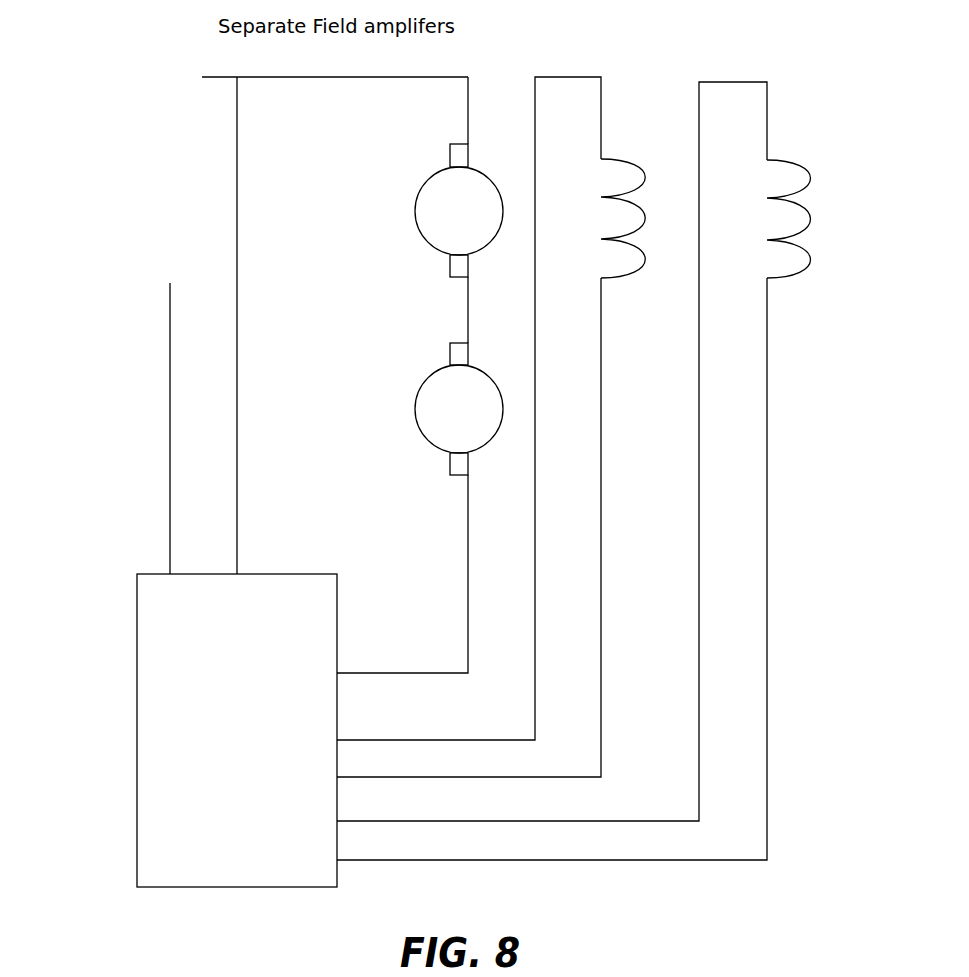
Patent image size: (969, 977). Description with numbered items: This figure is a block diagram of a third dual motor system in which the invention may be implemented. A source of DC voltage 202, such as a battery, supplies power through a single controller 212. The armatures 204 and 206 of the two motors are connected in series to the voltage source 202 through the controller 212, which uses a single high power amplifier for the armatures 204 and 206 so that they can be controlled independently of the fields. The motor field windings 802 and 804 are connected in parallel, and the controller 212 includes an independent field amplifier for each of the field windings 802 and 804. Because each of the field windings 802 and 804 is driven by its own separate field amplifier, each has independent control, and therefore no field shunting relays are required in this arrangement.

The source of DC voltage 202 is at (117, 163).
The armature 204 is at (416, 207).
The armature 206 is at (422, 390).
The controller 212 is at (137, 609).
The field winding 802 is at (612, 150).
The field winding 804 is at (788, 151).